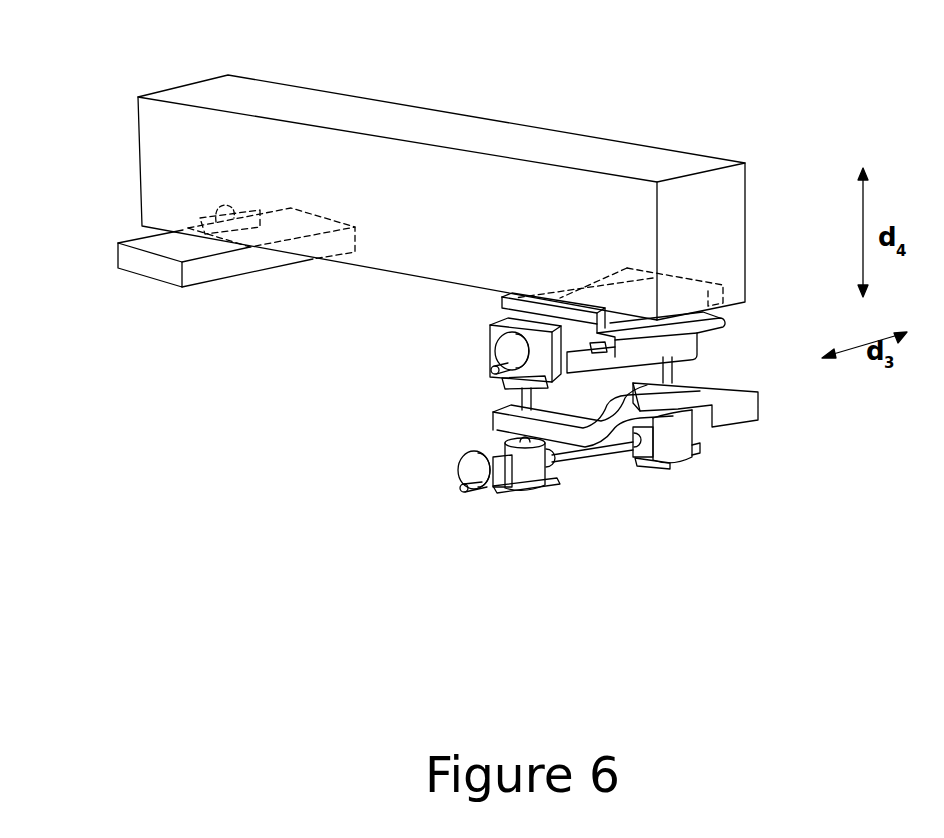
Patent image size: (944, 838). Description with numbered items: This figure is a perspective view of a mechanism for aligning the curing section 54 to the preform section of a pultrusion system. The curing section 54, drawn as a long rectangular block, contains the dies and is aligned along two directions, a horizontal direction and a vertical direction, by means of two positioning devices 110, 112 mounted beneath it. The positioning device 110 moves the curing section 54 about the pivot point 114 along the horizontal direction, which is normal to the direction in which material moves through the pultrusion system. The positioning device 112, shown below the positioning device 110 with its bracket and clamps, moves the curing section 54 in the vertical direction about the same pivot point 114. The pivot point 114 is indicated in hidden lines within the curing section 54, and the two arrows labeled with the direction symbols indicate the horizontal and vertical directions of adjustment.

The curing section 54 is at (520, 123).
The pivot point 114 is at (216, 202).
The positioning device 110 is at (492, 322).
The positioning device 112 is at (527, 429).